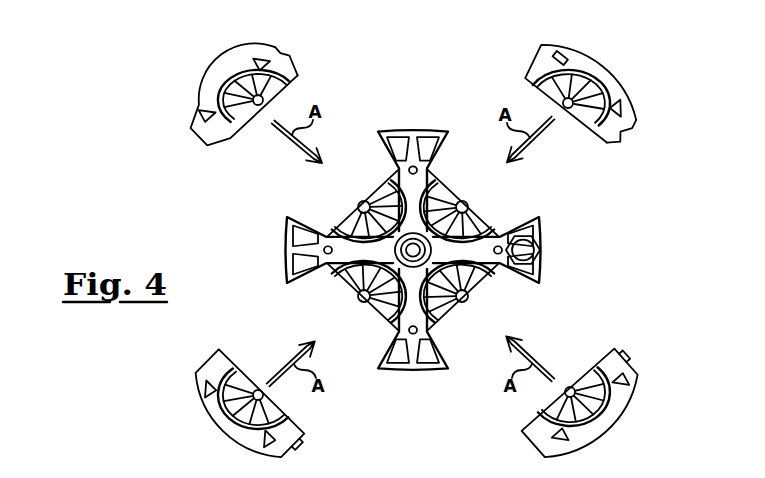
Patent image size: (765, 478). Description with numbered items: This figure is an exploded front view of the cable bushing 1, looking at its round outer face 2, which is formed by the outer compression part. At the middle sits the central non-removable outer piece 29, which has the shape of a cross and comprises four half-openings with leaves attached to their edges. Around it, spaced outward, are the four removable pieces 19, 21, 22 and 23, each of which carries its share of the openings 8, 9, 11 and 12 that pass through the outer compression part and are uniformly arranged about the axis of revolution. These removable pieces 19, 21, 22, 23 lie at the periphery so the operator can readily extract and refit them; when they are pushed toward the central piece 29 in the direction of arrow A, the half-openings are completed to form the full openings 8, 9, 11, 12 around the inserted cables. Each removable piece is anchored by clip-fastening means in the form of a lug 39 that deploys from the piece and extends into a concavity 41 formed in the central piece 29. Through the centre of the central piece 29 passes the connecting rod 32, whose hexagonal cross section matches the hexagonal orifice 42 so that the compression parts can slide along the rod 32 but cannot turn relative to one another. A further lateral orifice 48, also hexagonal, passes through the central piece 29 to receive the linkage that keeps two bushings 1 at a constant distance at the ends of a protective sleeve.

The cable bushing 1 is at (480, 229).
The round outer face 2 is at (487, 238).
The opening 8 is at (577, 55).
The opening 9 is at (235, 78).
The opening 11 is at (213, 404).
The opening 12 is at (580, 357).
The removable piece 19 is at (617, 78).
The removable piece 21 is at (298, 58).
The removable piece 22 is at (298, 446).
The removable piece 23 is at (638, 402).
The central non-removable outer piece 29 is at (412, 130).
The connecting rod 32 is at (462, 285).
The lug 39 is at (308, 66).
The concavity 41 is at (320, 225).
The hexagonal orifice 42 is at (437, 200).
The lateral orifice 48 is at (547, 252).